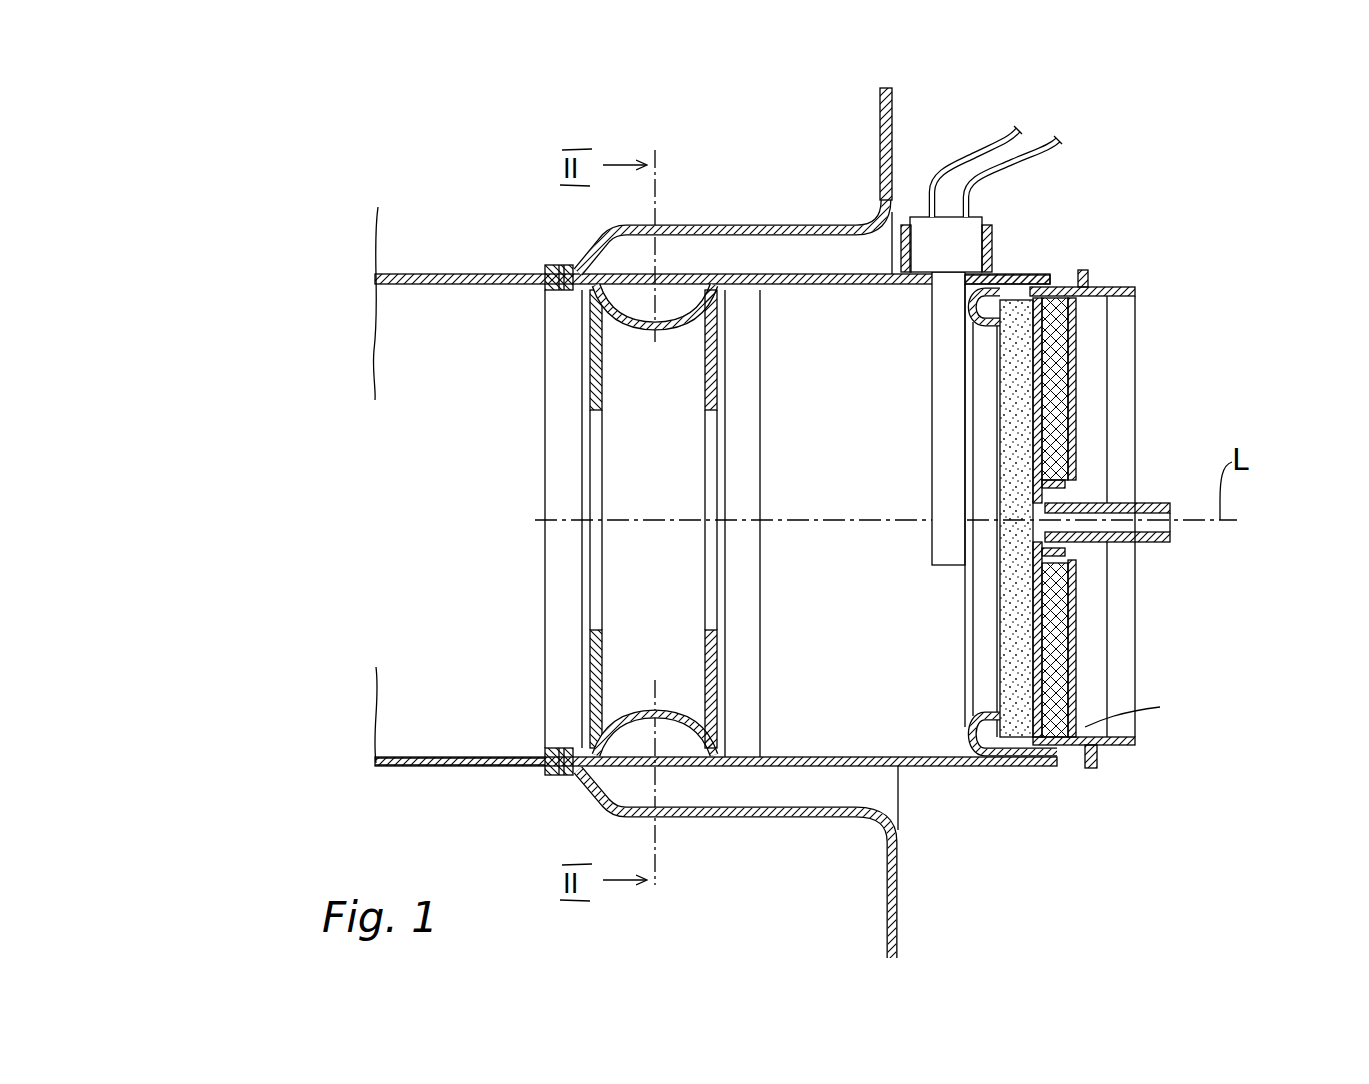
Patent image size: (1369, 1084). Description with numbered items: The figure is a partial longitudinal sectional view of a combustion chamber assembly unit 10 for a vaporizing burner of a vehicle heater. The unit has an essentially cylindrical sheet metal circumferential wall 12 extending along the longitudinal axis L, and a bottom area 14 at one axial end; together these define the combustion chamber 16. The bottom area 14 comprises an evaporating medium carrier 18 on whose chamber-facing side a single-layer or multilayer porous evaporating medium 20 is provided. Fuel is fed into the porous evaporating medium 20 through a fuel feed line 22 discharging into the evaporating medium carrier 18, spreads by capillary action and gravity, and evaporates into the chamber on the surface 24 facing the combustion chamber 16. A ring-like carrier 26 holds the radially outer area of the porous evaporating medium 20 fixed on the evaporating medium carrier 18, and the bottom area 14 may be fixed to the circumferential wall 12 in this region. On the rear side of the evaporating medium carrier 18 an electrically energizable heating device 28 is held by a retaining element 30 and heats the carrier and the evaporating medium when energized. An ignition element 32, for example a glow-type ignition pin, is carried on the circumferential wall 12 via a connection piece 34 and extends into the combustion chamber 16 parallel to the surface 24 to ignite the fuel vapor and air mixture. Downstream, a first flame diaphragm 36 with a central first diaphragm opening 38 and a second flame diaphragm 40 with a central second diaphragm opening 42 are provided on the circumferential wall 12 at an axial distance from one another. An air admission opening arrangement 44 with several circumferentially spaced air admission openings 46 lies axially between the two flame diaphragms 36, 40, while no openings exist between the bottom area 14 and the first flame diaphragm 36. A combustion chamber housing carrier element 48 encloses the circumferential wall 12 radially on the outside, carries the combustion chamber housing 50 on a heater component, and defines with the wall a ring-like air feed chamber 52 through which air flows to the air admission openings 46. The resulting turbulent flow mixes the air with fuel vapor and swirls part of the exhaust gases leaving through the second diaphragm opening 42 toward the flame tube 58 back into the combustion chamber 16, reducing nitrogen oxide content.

The combustion chamber assembly unit 10 is at (225, 200).
The circumferential wall 12 is at (408, 273).
The bottom area 14 is at (1112, 262).
The combustion chamber 16 is at (826, 695).
The evaporating medium carrier 18 is at (1072, 410).
The porous evaporating medium 20 is at (992, 690).
The fuel feed line 22 is at (1165, 548).
The surface 24 is at (998, 608).
The ring-like carrier 26 is at (1035, 757).
The electrically energizable heating device 28 is at (1078, 355).
The retaining element 30 is at (1078, 640).
The ignition element 32 is at (945, 425).
The connection piece 34 is at (993, 226).
The first flame diaphragm 36 is at (710, 665).
The first diaphragm opening 38 is at (712, 565).
The second flame diaphragm 40 is at (592, 372).
The second diaphragm opening 42 is at (598, 451).
The air admission opening arrangement 44 is at (620, 783).
The air admission openings 46 is at (670, 298).
The combustion chamber housing carrier element 48 is at (878, 115).
The combustion chamber housing 50 is at (1128, 804).
The air feed chamber 52 is at (806, 252).
The flame tube 58 is at (400, 763).